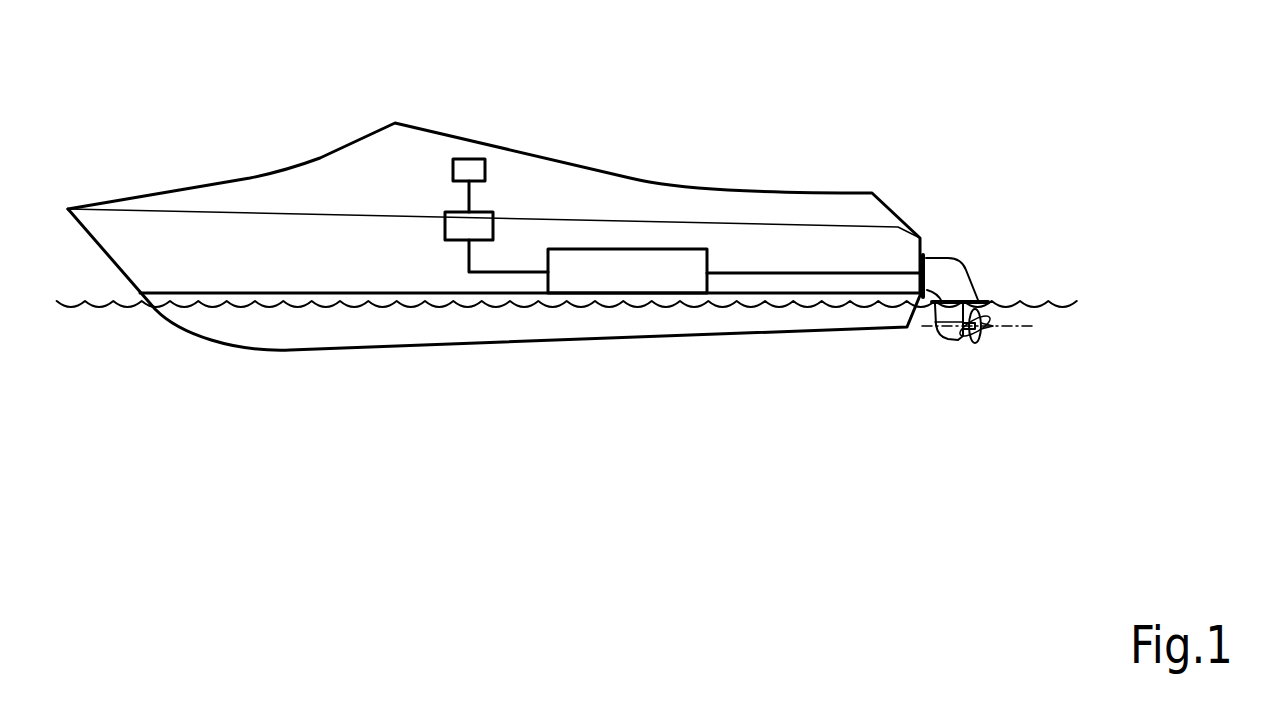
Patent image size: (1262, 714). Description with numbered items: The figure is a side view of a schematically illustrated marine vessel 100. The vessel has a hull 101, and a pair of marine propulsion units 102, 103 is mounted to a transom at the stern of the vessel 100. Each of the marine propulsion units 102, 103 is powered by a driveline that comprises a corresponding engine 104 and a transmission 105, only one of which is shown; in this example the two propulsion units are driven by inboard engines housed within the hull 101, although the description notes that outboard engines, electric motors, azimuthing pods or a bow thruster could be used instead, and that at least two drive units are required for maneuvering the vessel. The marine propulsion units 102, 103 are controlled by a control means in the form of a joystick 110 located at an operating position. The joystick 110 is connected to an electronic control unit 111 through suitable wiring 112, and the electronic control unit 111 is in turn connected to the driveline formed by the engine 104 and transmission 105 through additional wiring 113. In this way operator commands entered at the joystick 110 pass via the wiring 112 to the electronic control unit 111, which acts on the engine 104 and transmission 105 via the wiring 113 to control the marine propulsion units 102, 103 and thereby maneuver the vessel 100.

The marine vessel 100 is at (503, 205).
The hull 101 is at (305, 268).
The marine propulsion unit 102 is at (948, 250).
The marine propulsion unit 103 is at (983, 278).
The engine 104 is at (623, 272).
The transmission 105 is at (793, 280).
The joystick 110 is at (503, 135).
The electronic control unit 111 is at (447, 240).
The wiring 112 is at (460, 205).
The wiring 113 is at (495, 273).